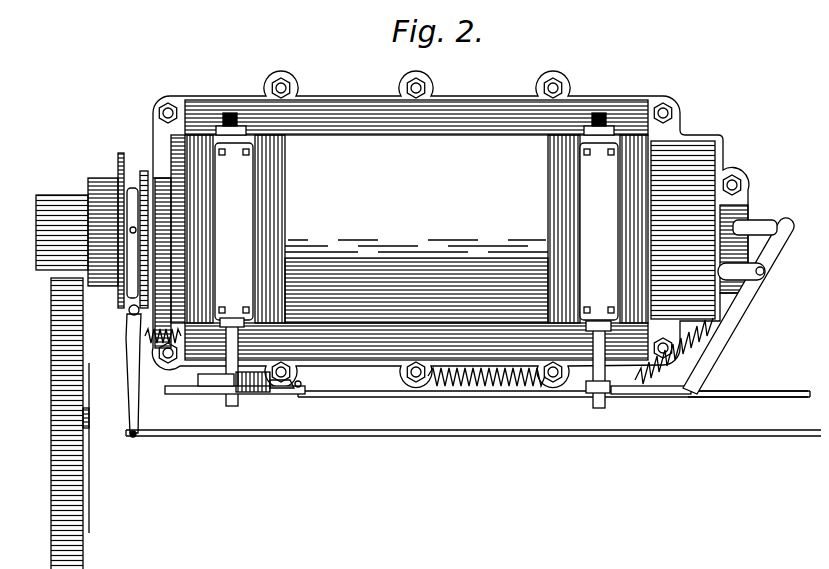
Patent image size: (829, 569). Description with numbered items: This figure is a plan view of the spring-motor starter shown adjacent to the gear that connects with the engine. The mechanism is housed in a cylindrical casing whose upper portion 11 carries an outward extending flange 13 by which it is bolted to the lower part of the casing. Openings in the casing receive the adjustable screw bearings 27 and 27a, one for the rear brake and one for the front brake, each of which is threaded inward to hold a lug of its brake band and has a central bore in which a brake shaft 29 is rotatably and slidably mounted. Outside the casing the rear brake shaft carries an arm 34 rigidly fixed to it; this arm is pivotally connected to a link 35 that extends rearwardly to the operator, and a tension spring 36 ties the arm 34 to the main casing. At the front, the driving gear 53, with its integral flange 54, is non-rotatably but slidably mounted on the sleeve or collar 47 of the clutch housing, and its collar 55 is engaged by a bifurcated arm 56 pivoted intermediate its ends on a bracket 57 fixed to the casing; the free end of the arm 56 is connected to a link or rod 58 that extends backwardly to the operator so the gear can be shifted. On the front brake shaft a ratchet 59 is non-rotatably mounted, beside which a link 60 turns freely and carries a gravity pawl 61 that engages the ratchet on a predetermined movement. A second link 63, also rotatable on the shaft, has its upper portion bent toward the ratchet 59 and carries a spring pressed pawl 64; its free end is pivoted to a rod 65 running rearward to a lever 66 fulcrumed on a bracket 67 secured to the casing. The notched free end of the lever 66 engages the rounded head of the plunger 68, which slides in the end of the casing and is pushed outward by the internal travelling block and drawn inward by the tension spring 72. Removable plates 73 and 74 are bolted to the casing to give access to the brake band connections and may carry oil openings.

The upper portion of casing 11 is at (416, 262).
The outward extending flange 13 is at (337, 92).
The adjustable screw bearing 27 is at (600, 112).
The adjustable screw bearing 27a is at (222, 110).
The brake shaft 29 is at (222, 350).
The arm 34 is at (645, 388).
The link 35 is at (741, 390).
The tension spring 36 is at (660, 342).
The sleeve or collar 47 is at (62, 232).
The driving gear 53 is at (91, 172).
The integral flange 54 is at (116, 150).
The collar 55 is at (135, 170).
The bifurcated arm 56 is at (122, 332).
The bracket 57 is at (124, 308).
The link or rod 58 is at (405, 429).
The ratchet 59 is at (247, 386).
The link 60 is at (278, 382).
The gravity pawl 61 is at (294, 376).
The second link 63 is at (190, 388).
The spring pressed pawl 64 is at (212, 380).
The rod 65 is at (385, 388).
The lever 66 is at (722, 320).
The bracket 67 is at (745, 270).
The plunger 68 is at (752, 213).
The tension spring 72 is at (508, 380).
The removable plate 73 is at (234, 231).
The removable plate 74 is at (599, 231).